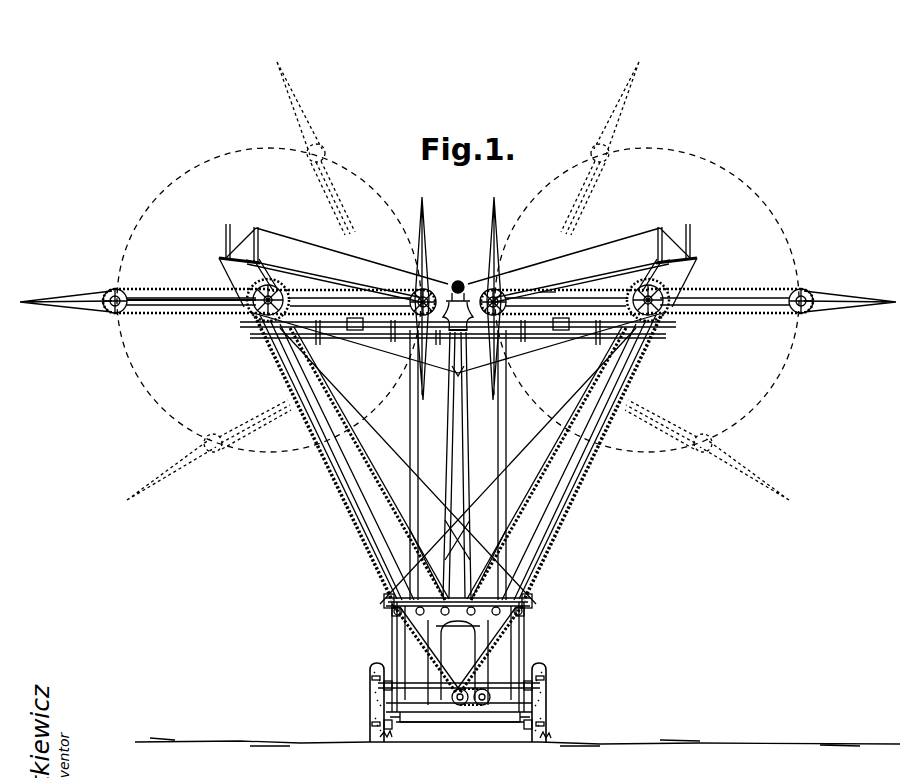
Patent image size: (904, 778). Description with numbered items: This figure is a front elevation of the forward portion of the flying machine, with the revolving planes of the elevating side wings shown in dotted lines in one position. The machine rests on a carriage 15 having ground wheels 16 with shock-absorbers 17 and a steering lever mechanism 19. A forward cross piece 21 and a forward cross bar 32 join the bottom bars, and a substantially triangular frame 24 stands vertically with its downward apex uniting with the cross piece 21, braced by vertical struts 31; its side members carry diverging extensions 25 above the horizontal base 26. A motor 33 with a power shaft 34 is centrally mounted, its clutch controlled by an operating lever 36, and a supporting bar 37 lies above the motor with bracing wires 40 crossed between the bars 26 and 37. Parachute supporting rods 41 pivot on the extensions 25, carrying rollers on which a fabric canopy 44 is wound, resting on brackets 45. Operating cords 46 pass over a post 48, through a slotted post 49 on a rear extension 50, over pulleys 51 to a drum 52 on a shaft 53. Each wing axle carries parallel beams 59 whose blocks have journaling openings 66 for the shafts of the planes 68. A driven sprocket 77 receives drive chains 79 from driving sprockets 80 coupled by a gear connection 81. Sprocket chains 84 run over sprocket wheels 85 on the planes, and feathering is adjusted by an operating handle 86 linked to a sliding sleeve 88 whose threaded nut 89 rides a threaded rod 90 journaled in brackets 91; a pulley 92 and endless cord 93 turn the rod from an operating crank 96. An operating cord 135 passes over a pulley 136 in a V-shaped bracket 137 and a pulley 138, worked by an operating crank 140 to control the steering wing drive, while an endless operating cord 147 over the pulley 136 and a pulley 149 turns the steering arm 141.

The carriage 15 is at (459, 711).
The ground wheels 16 is at (370, 679).
The shock-absorbers 17 is at (392, 725).
The steering lever mechanism 19 is at (416, 490).
The forward cross piece 21 is at (514, 710).
The triangular frame 24 is at (574, 512).
The diverging extensions 25 is at (266, 284).
The base 26 is at (437, 343).
The vertical struts 31 is at (391, 655).
The forward cross bar 32 is at (460, 730).
The motor 33 is at (458, 662).
The power shaft 34 is at (416, 578).
The operating lever 36 is at (400, 632).
The supporting bar 37 is at (498, 604).
The bracing wires 40 is at (458, 466).
The parachute supporting rods 41 is at (302, 270).
The fabric canopy 44 is at (464, 283).
The brackets 45 is at (455, 282).
The operating cords 46 is at (394, 267).
The post 48 is at (259, 245).
The slotted post 49 is at (225, 228).
The rear extension 50 is at (220, 261).
The pulleys 51 is at (445, 590).
The drum 52 is at (458, 591).
The shaft 53 is at (145, 313).
The parallel beams 59 is at (557, 287).
The journaling openings 66 is at (487, 210).
The planes 68 is at (284, 96).
The driven sprocket 77 is at (283, 289).
The drive chains 79 is at (592, 479).
The driving sprockets 80 is at (461, 689).
The gear connection 81 is at (483, 688).
The sprocket chains 84 is at (160, 291).
The sprocket wheels 85 is at (108, 311).
The operating handle 86 is at (262, 335).
The sliding sleeve 88 is at (750, 291).
The threaded nut 89 is at (360, 330).
The threaded rod 90 is at (408, 329).
The brackets 91 is at (513, 338).
The pulley 92 is at (468, 337).
The endless cord 93 is at (409, 430).
The operating crank 96 is at (392, 612).
The operating cord 135 is at (447, 408).
The pulley 136 is at (464, 318).
The V-shaped bracket 137 is at (453, 371).
The pulley 138 is at (458, 660).
The operating crank 140 is at (392, 604).
The steering arm 141 is at (479, 638).
The endless operating cord 147 is at (471, 408).
The pulley 149 is at (458, 582).